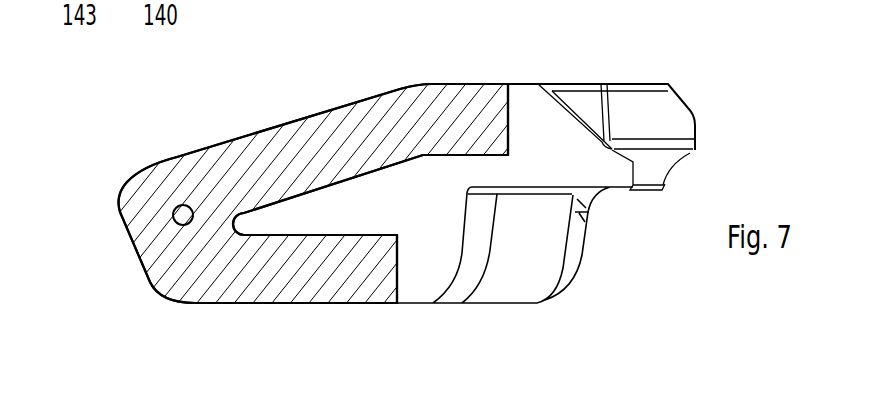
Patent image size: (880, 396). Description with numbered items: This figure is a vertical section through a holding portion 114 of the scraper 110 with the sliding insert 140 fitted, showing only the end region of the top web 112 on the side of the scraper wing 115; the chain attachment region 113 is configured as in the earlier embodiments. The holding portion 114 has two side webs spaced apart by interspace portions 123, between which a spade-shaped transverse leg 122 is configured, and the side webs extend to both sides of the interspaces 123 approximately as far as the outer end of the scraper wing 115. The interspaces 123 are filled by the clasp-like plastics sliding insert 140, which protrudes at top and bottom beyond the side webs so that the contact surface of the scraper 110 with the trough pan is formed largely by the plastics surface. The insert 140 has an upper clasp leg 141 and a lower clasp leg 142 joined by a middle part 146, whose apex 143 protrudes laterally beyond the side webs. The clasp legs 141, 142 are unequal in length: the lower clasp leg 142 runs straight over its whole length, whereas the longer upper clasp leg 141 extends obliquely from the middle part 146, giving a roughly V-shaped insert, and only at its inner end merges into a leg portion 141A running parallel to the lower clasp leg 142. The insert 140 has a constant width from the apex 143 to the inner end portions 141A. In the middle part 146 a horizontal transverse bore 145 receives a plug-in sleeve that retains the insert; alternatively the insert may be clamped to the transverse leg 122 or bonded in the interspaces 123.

The scraper 110 is at (565, 78).
The top web 112 is at (638, 106).
The chain attachment region 113 is at (665, 203).
The holding portion 114 is at (580, 214).
The scraper wing 115 is at (133, 270).
The transverse leg 122 is at (315, 207).
The interspace portion 123 is at (427, 98).
The sliding insert 140 is at (206, 142).
The upper clasp leg 141 is at (343, 120).
The leg portion 141A is at (487, 102).
The lower clasp leg 142 is at (287, 277).
The apex 143 is at (135, 198).
The transverse bore 145 is at (183, 215).
The middle part 146 is at (198, 232).